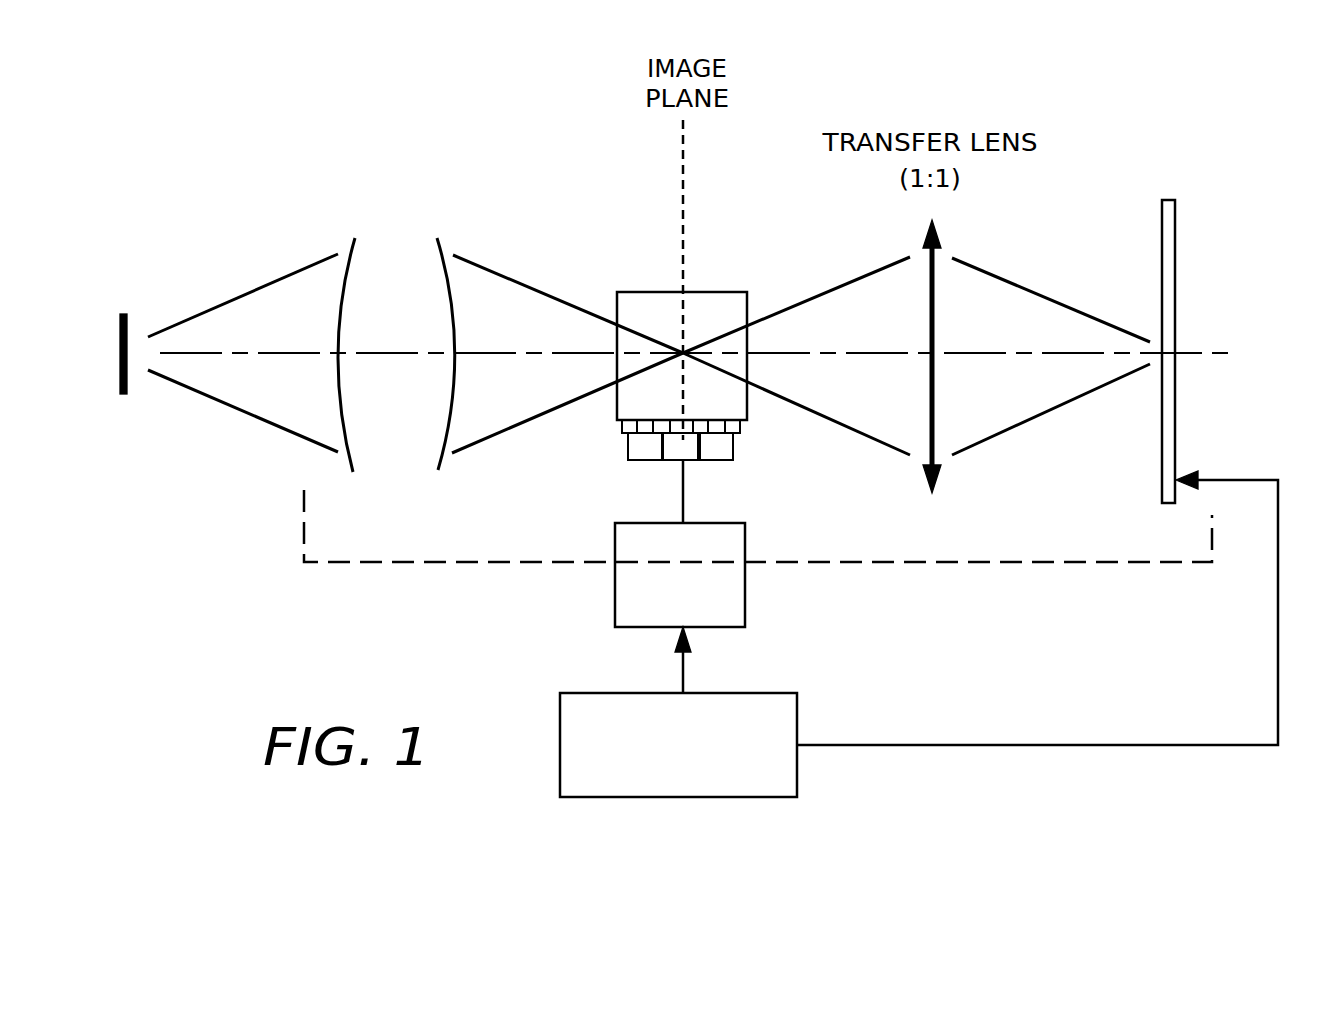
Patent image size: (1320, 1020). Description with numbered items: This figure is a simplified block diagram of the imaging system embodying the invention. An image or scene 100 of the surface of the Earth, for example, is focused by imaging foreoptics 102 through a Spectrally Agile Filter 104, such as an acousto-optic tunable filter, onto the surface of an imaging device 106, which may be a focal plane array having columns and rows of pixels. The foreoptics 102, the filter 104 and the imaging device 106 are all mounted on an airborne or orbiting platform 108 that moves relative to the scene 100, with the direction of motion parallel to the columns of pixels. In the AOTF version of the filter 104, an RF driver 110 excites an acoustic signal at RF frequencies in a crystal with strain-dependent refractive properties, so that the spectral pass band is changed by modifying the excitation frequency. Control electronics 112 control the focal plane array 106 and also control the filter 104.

The scene 100 is at (120, 332).
The imaging foreoptics 102 is at (430, 452).
The Spectrally Agile Filter (SAF) 104 is at (650, 292).
The imaging device 106 is at (1175, 200).
The platform 108 is at (303, 530).
The RF driver 110 is at (727, 522).
The control electronics 112 is at (763, 693).